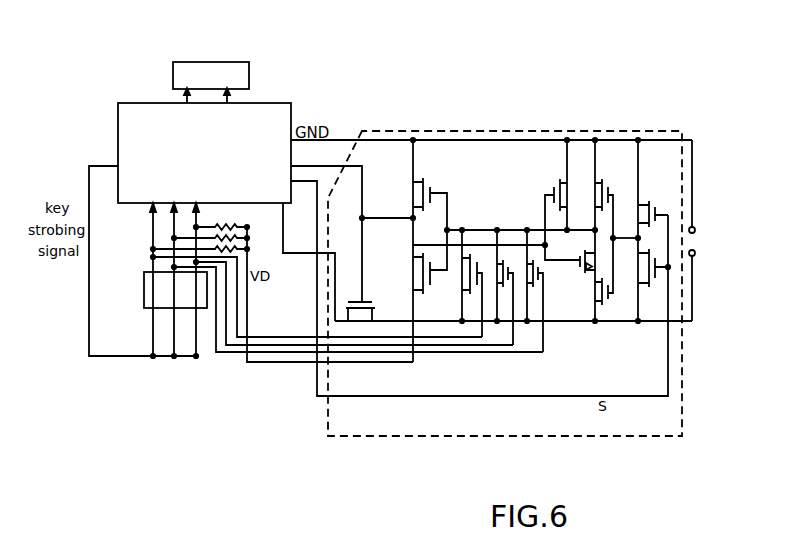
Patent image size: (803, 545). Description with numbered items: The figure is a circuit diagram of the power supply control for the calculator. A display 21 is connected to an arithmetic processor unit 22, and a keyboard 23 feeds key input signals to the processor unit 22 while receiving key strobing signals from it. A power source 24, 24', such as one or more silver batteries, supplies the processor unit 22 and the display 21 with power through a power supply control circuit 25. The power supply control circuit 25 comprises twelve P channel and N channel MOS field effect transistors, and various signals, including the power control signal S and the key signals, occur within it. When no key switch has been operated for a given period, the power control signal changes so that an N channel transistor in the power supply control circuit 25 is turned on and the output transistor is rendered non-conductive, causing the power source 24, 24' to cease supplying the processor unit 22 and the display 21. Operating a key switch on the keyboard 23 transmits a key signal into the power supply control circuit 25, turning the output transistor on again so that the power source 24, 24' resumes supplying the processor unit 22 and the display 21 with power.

The display 21 is at (250, 73).
The arithmetic processor unit 22 is at (280, 123).
The keyboard 23 is at (207, 308).
The power supply 24 is at (712, 229).
The power source terminal 24' is at (711, 254).
The power supply control circuit 25 is at (410, 425).